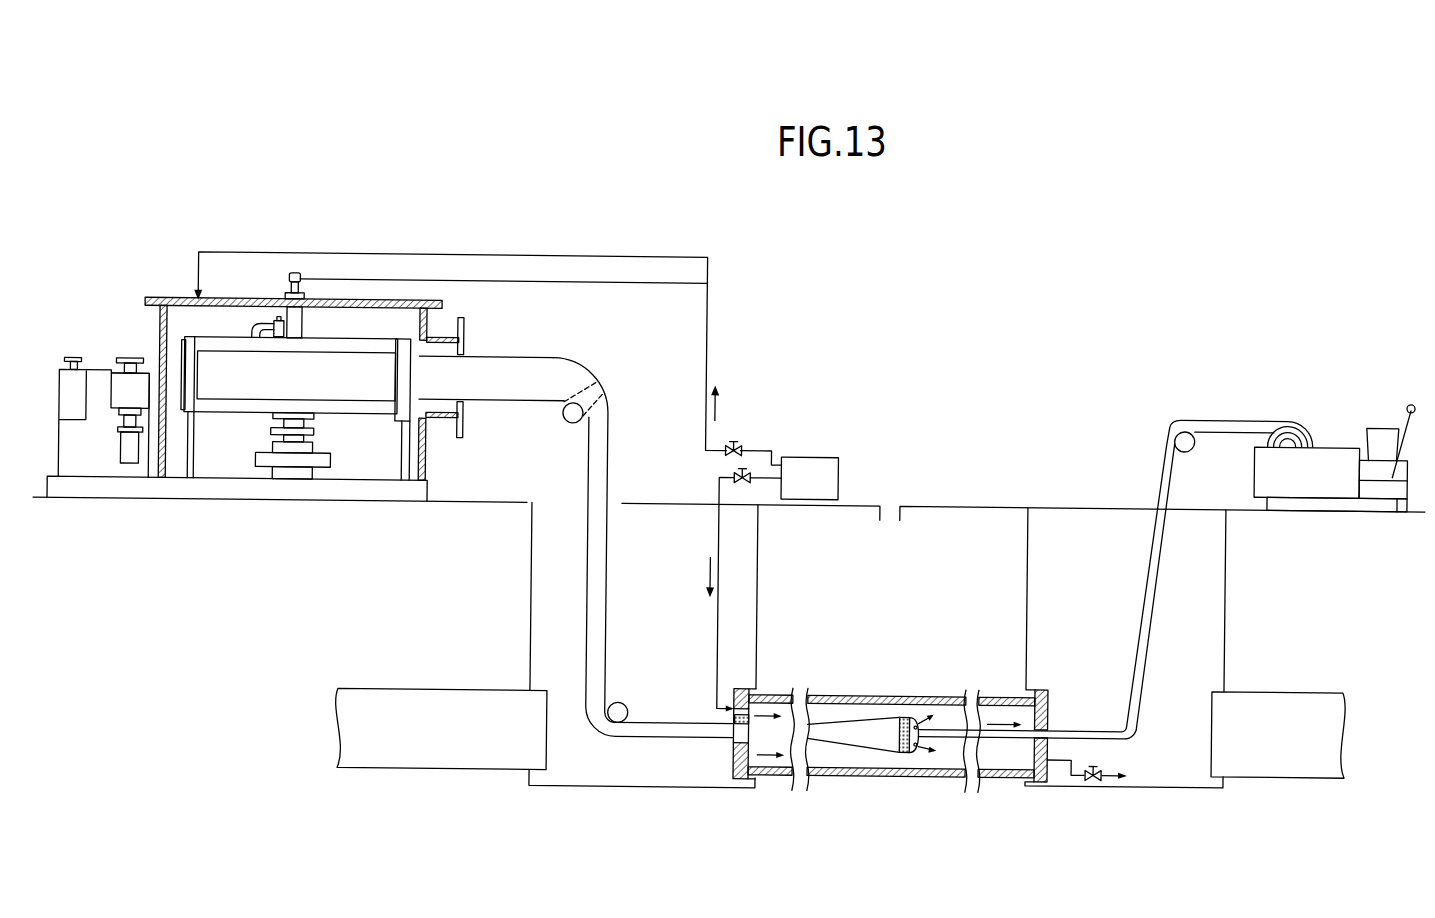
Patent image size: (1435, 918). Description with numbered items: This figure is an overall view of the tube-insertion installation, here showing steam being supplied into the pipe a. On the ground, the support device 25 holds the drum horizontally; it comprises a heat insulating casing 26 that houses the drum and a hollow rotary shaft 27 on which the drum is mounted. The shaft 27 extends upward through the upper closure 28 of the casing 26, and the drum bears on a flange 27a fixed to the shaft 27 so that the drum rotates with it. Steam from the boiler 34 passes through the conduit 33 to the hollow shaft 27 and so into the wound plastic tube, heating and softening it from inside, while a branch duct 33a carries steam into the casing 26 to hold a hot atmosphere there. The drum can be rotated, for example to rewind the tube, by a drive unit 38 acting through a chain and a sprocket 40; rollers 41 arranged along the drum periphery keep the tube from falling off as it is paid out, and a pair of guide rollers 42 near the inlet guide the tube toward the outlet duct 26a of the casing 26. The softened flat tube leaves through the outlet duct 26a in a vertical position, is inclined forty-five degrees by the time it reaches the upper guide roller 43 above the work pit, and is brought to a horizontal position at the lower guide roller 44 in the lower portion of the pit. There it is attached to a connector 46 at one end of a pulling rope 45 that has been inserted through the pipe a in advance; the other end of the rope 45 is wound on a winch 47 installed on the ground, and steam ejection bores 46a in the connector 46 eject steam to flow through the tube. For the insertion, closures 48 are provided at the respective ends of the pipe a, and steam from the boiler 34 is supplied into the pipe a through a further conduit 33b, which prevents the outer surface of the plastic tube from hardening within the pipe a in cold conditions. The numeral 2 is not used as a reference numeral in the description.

The pressure vessel 2 is at (323, 336).
The support device 25 is at (299, 464).
The heat insulating casing 26 is at (157, 332).
The outlet duct 26a is at (440, 420).
The hollow rotary shaft 27 is at (283, 276).
The flange 27a is at (272, 414).
The upper closure 28 is at (149, 296).
The conduit 33 is at (510, 276).
The branch duct 33a is at (628, 231).
The conduit 33b is at (718, 610).
The boiler 34 is at (800, 457).
The drive unit 38 is at (65, 386).
The sprocket 40 is at (270, 430).
The rollers 41 is at (211, 335).
The guide rollers 42 is at (405, 334).
The upper guide roller 43 is at (563, 414).
The lower guide roller 44 is at (621, 697).
The pulling rope 45 is at (980, 702).
The connector 46 is at (916, 752).
The steam ejection bores 46a is at (928, 750).
The winch 47 is at (1316, 460).
The closures 48 is at (735, 762).
The pipe a is at (886, 687).